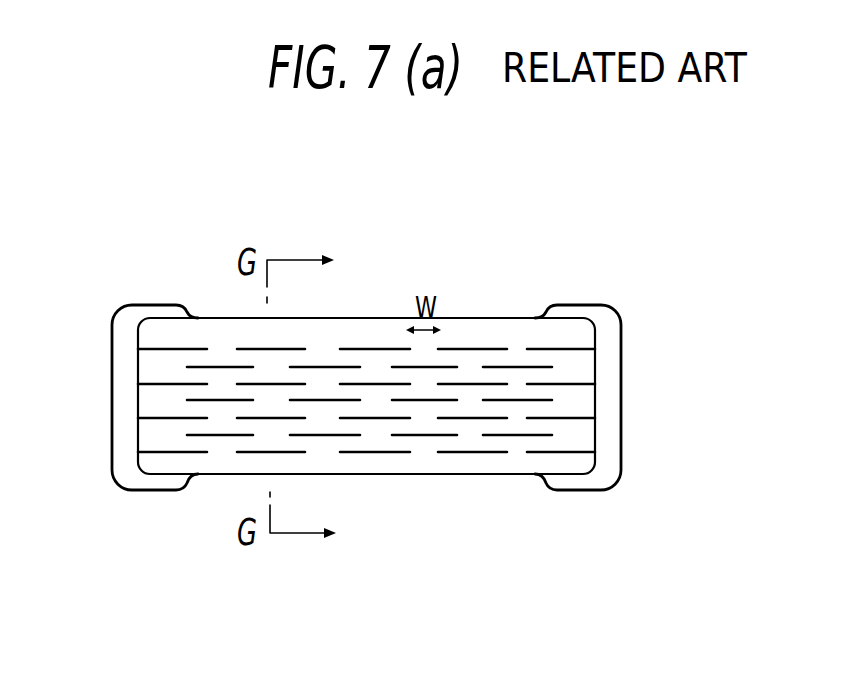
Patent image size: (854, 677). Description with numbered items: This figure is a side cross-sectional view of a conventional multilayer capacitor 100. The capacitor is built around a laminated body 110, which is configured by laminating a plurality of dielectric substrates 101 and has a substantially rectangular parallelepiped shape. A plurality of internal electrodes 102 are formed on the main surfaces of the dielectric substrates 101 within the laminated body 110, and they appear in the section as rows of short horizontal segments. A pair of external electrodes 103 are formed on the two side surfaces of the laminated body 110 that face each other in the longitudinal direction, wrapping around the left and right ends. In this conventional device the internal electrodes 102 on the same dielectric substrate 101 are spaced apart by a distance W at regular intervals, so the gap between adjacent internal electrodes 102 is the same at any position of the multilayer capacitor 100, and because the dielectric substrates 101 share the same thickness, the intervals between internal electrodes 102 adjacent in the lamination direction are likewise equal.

The multilayer capacitor 100 is at (116, 238).
The dielectric substrate 101 is at (332, 357).
The internal electrode 102 is at (253, 349).
The external electrode 103 is at (115, 345).
The laminated body 110 is at (503, 311).